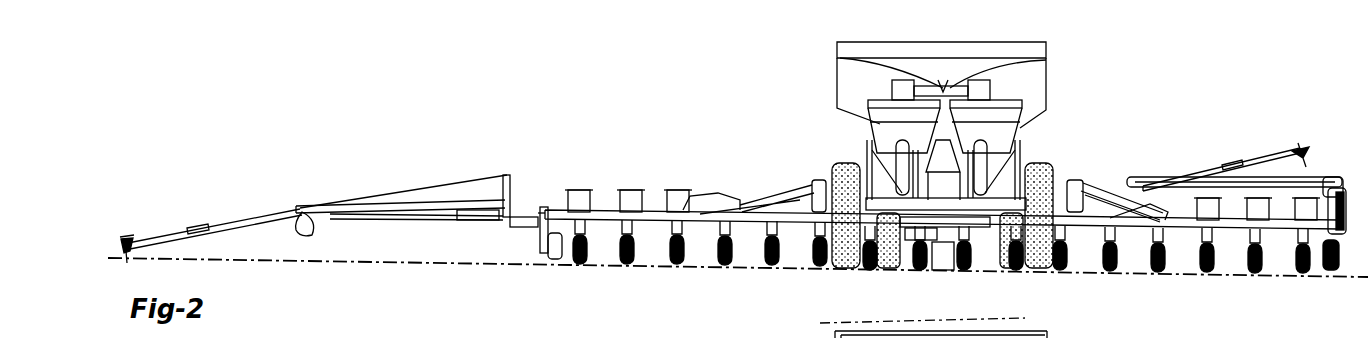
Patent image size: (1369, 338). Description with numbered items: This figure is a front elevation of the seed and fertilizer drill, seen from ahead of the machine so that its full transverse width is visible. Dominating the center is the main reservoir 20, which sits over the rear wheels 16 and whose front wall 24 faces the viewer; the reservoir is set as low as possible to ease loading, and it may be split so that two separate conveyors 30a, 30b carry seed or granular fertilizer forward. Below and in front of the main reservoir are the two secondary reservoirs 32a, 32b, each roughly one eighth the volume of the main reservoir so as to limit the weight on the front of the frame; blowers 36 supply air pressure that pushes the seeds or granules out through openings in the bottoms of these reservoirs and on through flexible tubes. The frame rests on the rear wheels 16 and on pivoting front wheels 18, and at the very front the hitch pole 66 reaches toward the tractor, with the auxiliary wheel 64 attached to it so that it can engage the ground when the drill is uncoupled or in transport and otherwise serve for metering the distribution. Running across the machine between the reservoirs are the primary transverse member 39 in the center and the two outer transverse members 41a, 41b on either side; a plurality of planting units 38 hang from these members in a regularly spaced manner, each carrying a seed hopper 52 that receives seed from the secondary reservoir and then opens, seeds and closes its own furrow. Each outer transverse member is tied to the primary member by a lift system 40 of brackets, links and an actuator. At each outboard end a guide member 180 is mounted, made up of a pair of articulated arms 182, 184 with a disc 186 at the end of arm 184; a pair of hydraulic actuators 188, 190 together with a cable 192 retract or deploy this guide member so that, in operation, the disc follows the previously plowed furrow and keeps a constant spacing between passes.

The main reservoir 20 is at (1050, 47).
The front wall 24 is at (1040, 88).
The first conveyor 30a is at (840, 58).
The second conveyor 30b is at (1048, 62).
The first secondary reservoir 32a is at (880, 125).
The second secondary reservoir 32b is at (1002, 128).
The blower 36 is at (900, 147).
The planting unit 38 is at (714, 246).
The primary transverse member 39 is at (968, 232).
The lift system 40 is at (808, 186).
The first outer transverse member 41a is at (650, 212).
The second outer transverse member 41b is at (1232, 232).
The seed hopper 52 is at (626, 197).
The auxiliary wheel 64 is at (943, 256).
The hitch pole 66 is at (908, 238).
The rear wheel 16 is at (852, 207).
The front pivoting wheel 18 is at (885, 256).
The guide member 180 is at (408, 202).
The first articulated arm 182 is at (420, 215).
The second articulated arm 184 is at (259, 216).
The disc 186 is at (125, 239).
The first hydraulic actuator 188 is at (520, 227).
The second hydraulic actuator 190 is at (481, 219).
The cable 192 is at (448, 190).